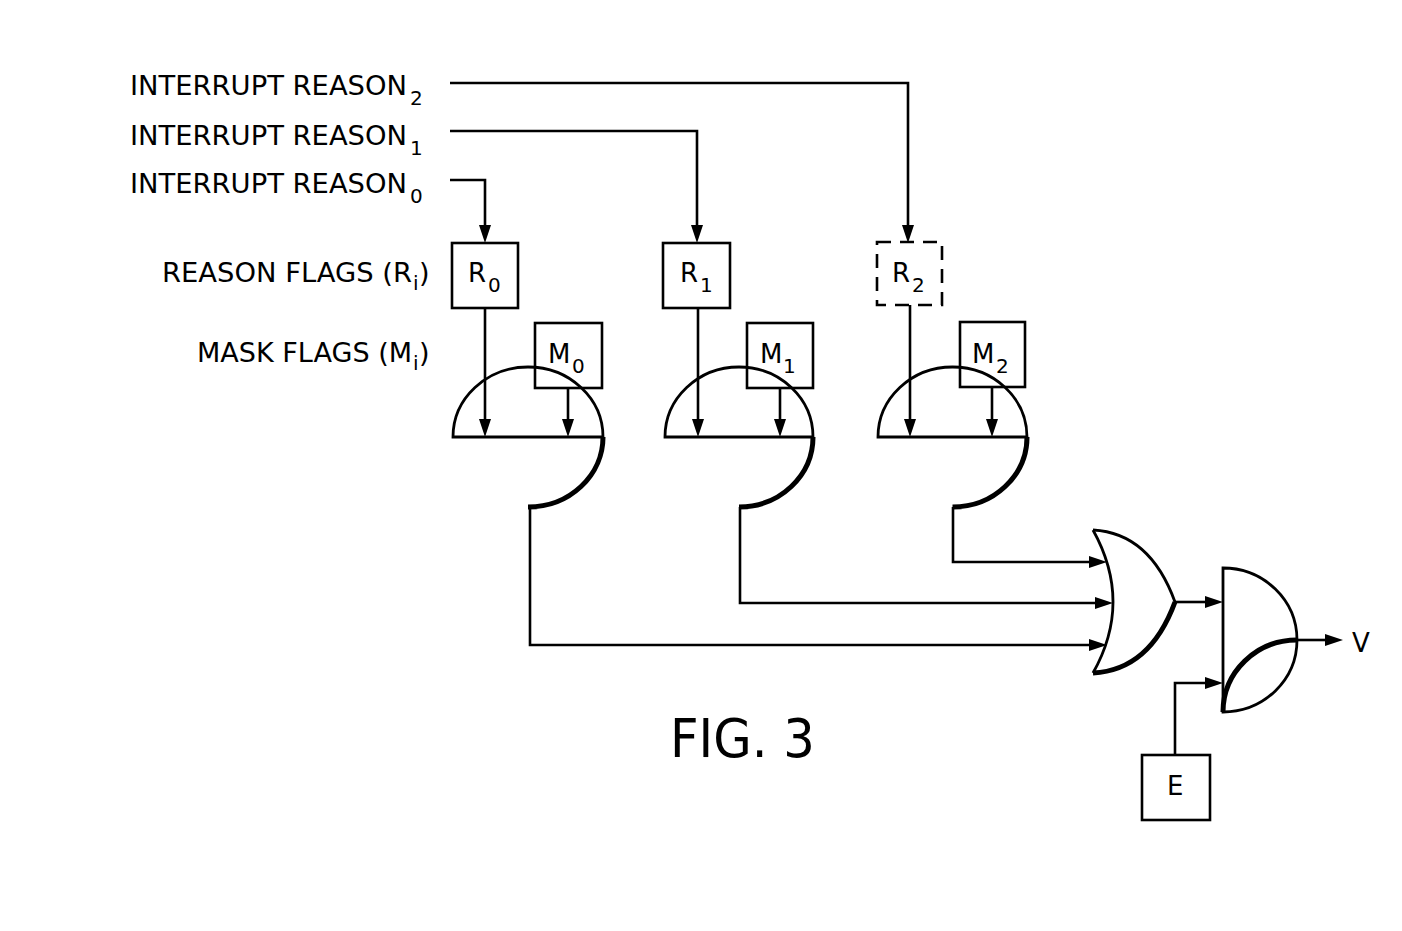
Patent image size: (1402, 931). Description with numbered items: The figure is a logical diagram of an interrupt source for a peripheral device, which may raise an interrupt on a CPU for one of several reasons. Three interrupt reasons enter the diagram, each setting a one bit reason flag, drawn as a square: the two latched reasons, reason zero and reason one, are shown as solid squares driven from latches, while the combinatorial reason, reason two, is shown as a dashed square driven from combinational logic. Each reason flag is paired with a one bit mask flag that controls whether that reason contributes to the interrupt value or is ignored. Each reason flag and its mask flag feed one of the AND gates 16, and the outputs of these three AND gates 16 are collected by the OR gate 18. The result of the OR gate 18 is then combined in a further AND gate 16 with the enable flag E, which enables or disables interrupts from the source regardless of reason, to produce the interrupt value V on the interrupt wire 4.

The AND gates 16 is at (918, 498).
The OR gate 18 is at (1145, 542).
The interrupt wire 4 is at (1315, 647).